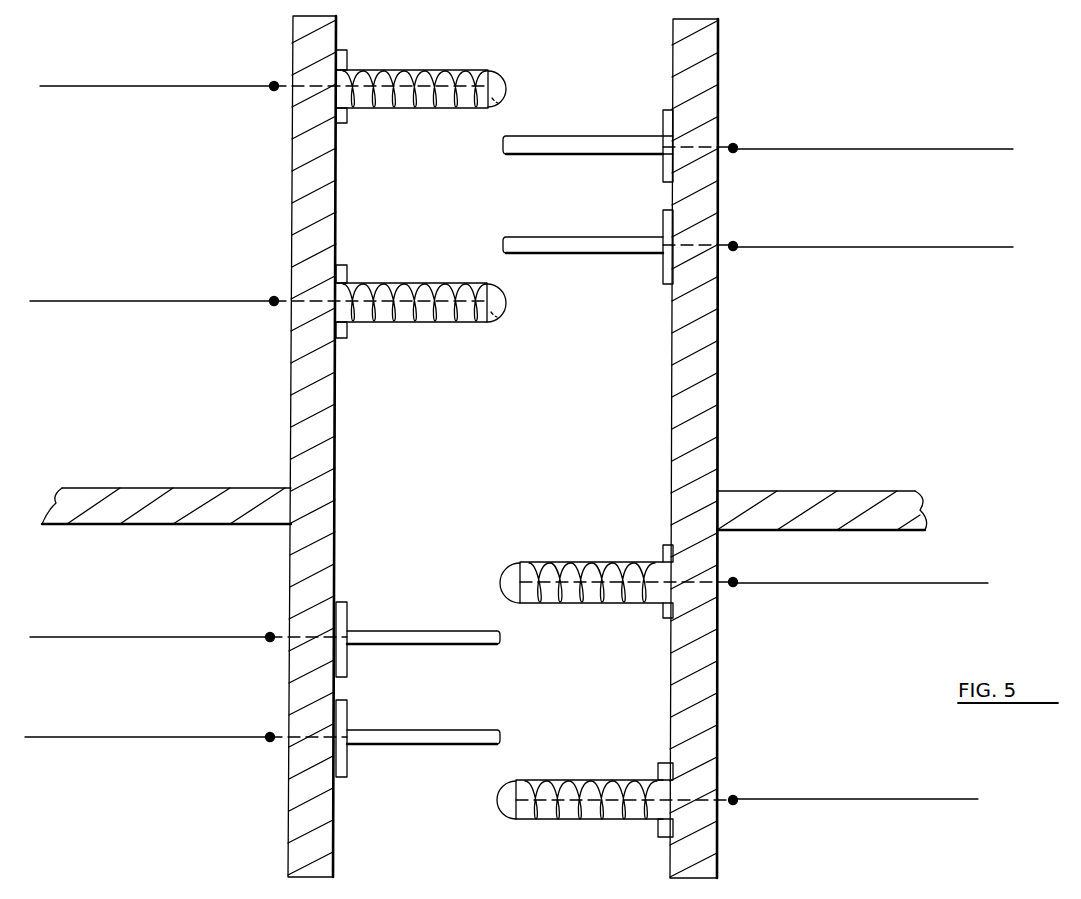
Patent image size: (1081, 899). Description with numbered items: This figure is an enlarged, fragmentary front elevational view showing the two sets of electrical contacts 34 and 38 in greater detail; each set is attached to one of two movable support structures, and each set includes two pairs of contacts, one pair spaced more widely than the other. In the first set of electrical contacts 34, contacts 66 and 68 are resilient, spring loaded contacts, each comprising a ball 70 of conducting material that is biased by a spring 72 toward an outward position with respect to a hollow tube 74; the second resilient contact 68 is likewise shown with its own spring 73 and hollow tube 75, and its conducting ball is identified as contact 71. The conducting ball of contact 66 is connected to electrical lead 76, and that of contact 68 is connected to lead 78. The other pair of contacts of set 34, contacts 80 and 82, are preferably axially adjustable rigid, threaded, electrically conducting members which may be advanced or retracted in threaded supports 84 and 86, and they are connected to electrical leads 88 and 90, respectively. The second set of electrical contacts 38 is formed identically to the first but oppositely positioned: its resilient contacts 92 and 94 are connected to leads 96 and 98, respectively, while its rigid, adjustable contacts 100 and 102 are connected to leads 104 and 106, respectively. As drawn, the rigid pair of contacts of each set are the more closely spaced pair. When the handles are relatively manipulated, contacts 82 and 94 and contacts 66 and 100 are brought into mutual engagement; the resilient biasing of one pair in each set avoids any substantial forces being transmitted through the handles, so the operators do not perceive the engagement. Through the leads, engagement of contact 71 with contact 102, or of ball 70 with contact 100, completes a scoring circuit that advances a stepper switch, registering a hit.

The set of electrical contacts 34 is at (415, 830).
The set of electrical contacts 38 is at (594, 824).
The resilient contact 66 is at (402, 112).
The resilient contact 68 is at (431, 335).
The ball 70 is at (495, 110).
The contact 71 is at (500, 298).
The spring 72 is at (405, 108).
The plunger 73 is at (432, 322).
The hollow tube 74 is at (378, 108).
The coil spring 75 is at (372, 322).
The electrical lead 76 is at (160, 86).
The electrical lead 78 is at (158, 301).
The adjustable contact 80 is at (500, 642).
The adjustable contact 82 is at (500, 737).
The threaded support 84 is at (347, 602).
The threaded support 86 is at (340, 776).
The electrical lead 88 is at (146, 637).
The electrical lead 90 is at (146, 737).
The resilient contact 92 is at (503, 562).
The resilient contact 94 is at (500, 815).
The lead 96 is at (867, 583).
The lead 98 is at (856, 799).
The adjustable contact 100 is at (505, 135).
The adjustable contact 102 is at (505, 236).
The lead 104 is at (855, 149).
The lead 106 is at (865, 247).